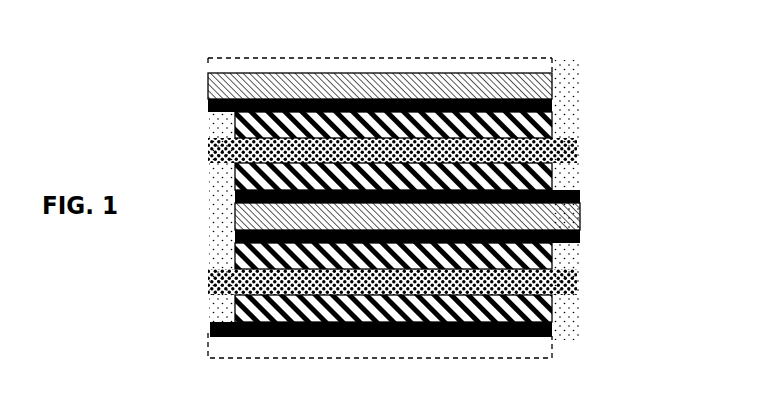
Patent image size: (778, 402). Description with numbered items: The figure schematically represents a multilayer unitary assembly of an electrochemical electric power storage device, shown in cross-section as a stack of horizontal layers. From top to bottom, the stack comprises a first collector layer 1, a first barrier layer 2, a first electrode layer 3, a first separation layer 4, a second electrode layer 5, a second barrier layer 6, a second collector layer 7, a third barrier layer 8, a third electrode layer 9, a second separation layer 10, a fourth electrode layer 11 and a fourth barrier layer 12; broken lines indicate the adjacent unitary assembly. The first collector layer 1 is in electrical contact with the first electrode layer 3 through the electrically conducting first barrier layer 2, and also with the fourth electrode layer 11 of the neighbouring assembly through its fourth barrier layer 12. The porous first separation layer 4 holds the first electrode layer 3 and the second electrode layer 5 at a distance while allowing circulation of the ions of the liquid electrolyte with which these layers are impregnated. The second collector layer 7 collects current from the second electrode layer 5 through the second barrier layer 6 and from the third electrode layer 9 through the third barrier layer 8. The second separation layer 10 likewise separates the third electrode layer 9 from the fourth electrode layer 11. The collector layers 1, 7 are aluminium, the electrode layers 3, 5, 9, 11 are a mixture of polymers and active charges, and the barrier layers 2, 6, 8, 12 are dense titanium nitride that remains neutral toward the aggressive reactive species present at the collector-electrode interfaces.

The first collector layer 1 is at (543, 84).
The first barrier layer 2 is at (547, 104).
The first electrode layer 3 is at (543, 127).
The first separation layer 4 is at (580, 149).
The second electrode layer 5 is at (543, 173).
The second barrier layer 6 is at (580, 194).
The second collector layer 7 is at (580, 215).
The third barrier layer 8 is at (580, 237).
The third electrode layer 9 is at (543, 257).
The second separation layer 10 is at (578, 280).
The fourth electrode layer 11 is at (547, 308).
The fourth barrier layer 12 is at (547, 330).